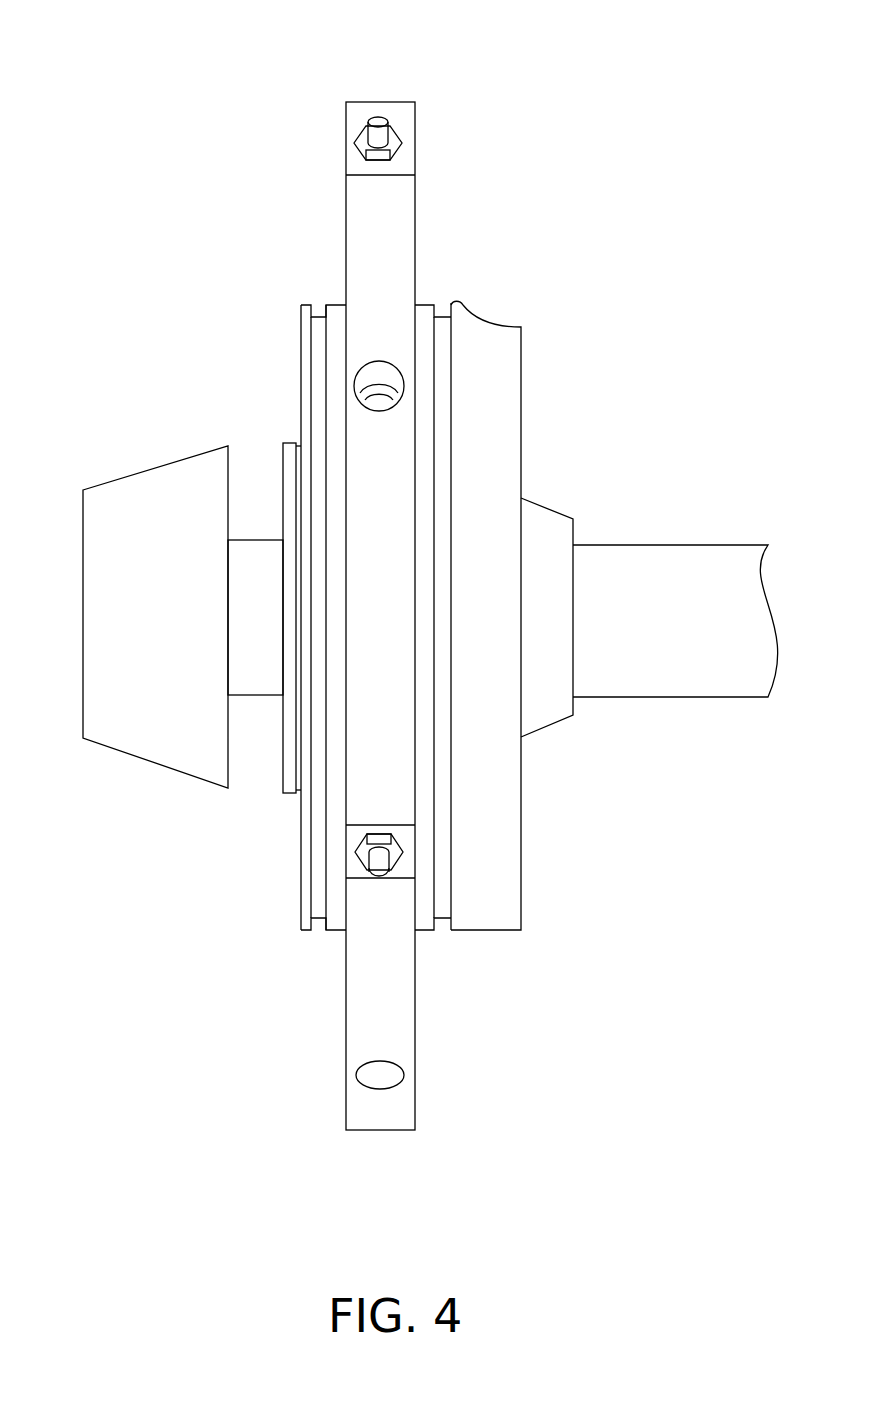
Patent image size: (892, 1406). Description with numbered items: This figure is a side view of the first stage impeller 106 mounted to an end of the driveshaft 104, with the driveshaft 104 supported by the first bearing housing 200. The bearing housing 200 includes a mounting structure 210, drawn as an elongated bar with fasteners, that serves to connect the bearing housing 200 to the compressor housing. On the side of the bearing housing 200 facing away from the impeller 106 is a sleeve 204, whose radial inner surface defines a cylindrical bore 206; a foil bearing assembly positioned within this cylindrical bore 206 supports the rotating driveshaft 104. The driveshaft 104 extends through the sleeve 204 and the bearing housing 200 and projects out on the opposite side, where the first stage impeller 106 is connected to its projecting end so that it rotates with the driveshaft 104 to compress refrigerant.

The first bearing housing 200 is at (401, 84).
The mounting structure 210 is at (415, 245).
The sleeve 204 is at (552, 510).
The driveshaft 104 is at (712, 545).
The cylindrical bore 206 is at (592, 710).
The first stage impeller 106 is at (147, 470).